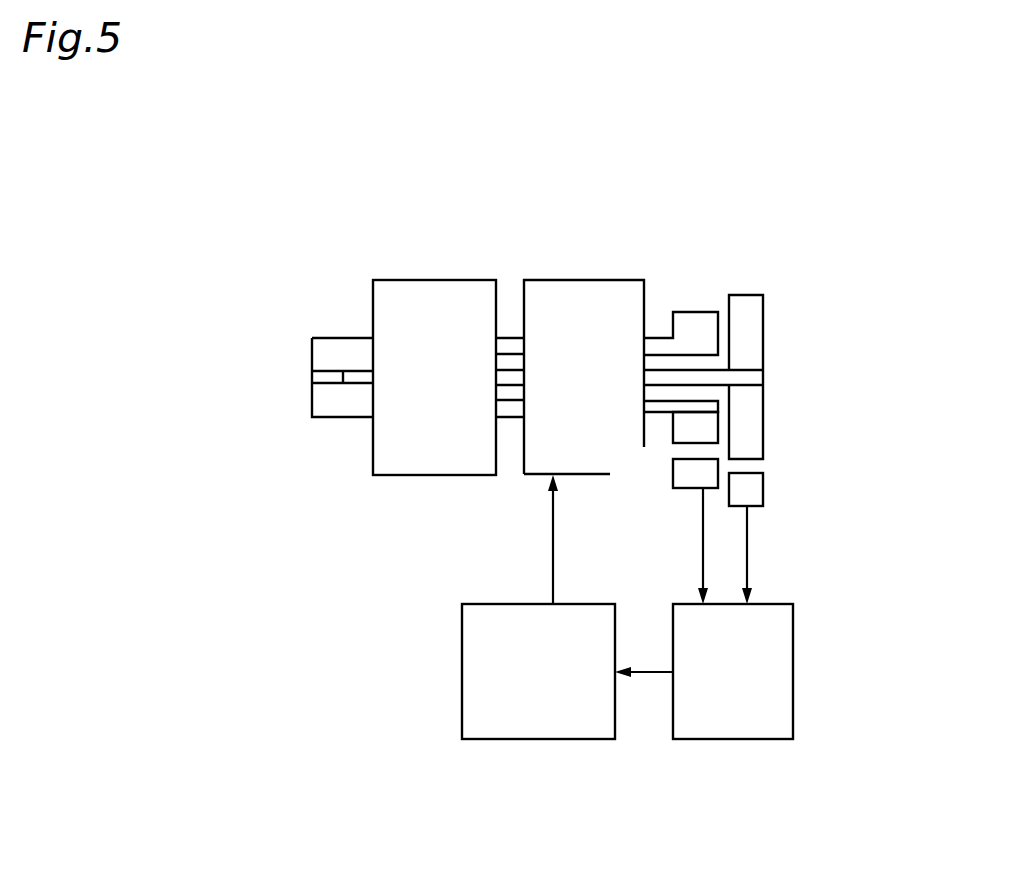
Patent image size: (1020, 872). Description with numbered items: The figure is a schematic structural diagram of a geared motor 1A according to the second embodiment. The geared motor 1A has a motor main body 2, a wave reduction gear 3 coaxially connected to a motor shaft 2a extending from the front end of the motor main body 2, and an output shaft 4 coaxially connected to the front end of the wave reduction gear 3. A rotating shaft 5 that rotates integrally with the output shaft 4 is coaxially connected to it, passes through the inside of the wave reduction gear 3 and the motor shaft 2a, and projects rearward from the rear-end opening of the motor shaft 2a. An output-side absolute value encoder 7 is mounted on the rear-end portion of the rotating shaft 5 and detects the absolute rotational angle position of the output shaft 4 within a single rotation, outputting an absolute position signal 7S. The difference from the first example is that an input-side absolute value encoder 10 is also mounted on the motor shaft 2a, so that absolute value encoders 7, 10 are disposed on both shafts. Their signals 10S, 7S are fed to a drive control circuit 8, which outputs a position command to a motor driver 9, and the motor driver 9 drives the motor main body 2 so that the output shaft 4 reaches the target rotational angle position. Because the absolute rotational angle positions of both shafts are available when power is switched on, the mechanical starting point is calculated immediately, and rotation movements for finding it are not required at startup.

The geared motor 1A is at (790, 259).
The motor main body 2 is at (555, 280).
The motor shaft 2a is at (512, 344).
The wave reduction gear 3 is at (440, 280).
The output shaft 4 is at (330, 348).
The rotating shaft 5 is at (693, 378).
The output-side absolute value encoder 7 is at (773, 431).
The absolute position signal 7S is at (747, 540).
The drive control circuit 8 is at (793, 661).
The motor driver 9 is at (462, 645).
The input-side absolute value encoder 10 is at (666, 431).
The absolute position signal of input-side encoder 10S is at (703, 522).